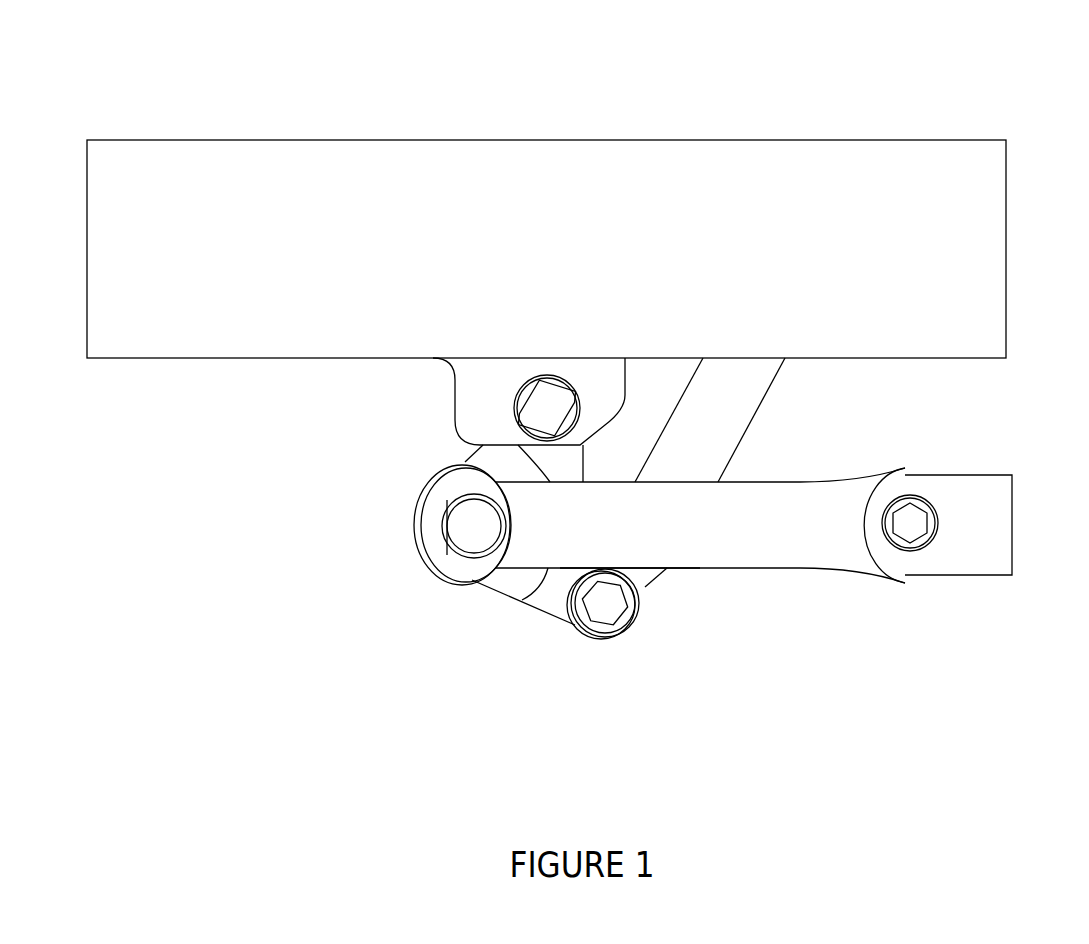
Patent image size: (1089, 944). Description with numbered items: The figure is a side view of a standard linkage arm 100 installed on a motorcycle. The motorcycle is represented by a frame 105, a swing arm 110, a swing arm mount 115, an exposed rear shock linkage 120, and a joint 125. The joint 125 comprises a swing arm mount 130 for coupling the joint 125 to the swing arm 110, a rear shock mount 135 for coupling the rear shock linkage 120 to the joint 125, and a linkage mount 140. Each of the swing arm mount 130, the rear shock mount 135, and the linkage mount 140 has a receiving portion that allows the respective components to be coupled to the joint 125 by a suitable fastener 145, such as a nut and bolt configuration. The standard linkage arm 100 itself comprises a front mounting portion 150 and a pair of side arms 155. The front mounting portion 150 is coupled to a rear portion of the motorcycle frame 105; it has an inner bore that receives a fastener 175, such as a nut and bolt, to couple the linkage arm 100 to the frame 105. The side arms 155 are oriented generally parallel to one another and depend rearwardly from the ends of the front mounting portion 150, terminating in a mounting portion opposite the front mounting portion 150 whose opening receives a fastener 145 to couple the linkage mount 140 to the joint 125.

The standard linkage arm 100 is at (832, 610).
The frame 105 is at (997, 575).
The swing arm 110 is at (562, 175).
The swing arm mount 115 is at (477, 405).
The exposed rear shock linkage 120 is at (740, 412).
The joint 125 is at (478, 606).
The swing arm mount 130 is at (562, 473).
The rear shock mount 135 is at (563, 618).
The linkage mount 140 is at (428, 524).
The fastener 145 is at (545, 410).
The front mounting portion 150 is at (905, 470).
The side arms 155 is at (730, 552).
The fastener 175 is at (908, 545).